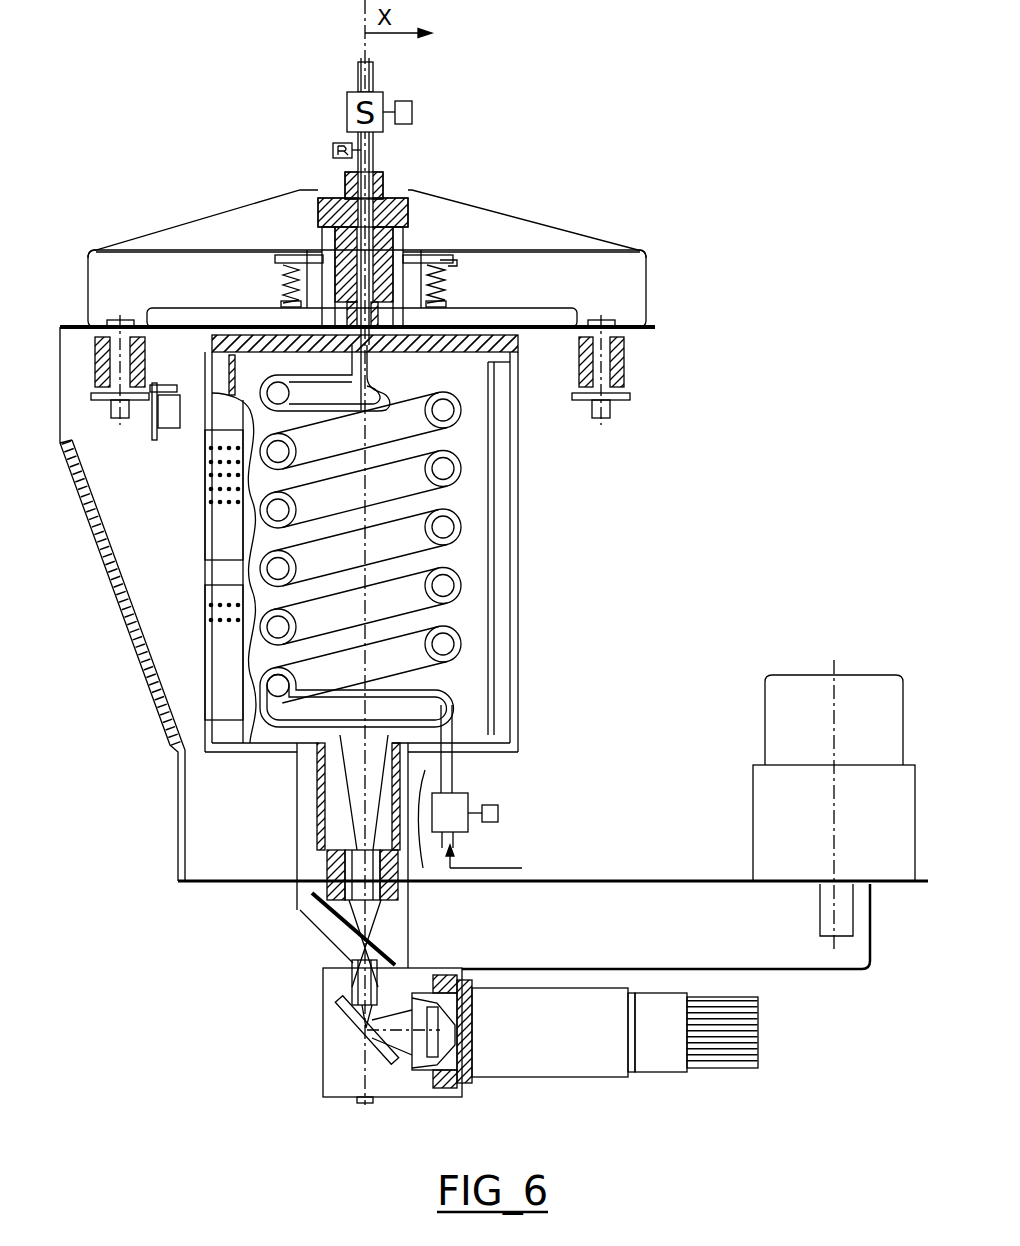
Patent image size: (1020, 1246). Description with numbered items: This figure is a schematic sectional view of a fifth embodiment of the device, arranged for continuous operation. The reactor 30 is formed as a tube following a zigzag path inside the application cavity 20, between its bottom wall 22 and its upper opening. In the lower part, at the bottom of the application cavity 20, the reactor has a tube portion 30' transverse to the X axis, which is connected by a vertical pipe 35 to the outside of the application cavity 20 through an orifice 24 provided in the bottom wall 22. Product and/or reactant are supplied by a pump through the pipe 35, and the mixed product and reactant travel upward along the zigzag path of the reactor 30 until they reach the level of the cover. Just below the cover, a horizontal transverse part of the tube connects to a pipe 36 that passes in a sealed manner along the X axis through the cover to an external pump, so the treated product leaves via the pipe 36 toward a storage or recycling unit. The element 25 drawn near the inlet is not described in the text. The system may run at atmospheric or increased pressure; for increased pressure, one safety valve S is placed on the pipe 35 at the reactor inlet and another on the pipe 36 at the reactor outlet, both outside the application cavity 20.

The pipe 36 is at (412, 192).
The application cavity 20 is at (510, 660).
The bottom wall 22 is at (510, 756).
The reactor 30 is at (422, 542).
The tube portion 30' is at (421, 698).
The vertical pipe 35 is at (455, 735).
The orifice 24 is at (465, 762).
The signal output 25 is at (467, 824).